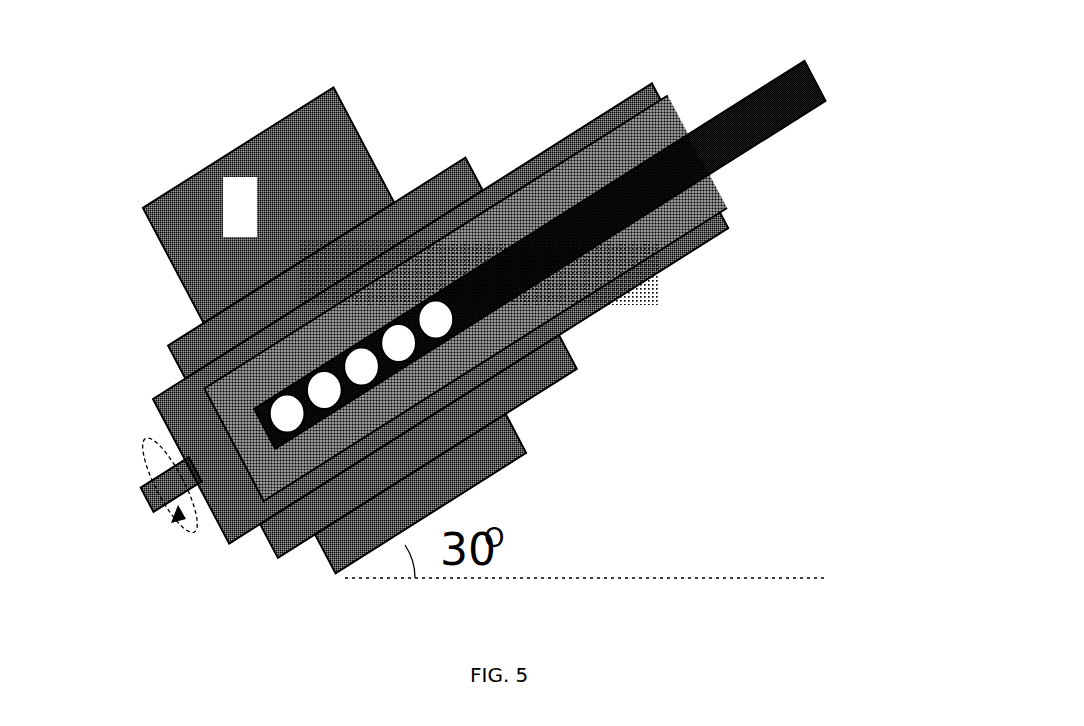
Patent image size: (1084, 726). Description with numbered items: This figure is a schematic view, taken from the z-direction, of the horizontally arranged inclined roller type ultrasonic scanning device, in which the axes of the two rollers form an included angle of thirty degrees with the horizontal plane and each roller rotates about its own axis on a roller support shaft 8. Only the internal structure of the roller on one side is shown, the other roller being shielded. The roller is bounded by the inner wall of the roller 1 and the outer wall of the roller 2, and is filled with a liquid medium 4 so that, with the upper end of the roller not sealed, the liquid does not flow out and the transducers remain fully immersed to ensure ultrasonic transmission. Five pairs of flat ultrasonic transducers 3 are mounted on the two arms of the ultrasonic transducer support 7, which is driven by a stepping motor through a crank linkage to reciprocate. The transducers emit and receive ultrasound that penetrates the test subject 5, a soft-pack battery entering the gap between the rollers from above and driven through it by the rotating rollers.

The inner wall of the roller 1 is at (191, 383).
The outer wall of the roller 2 is at (230, 318).
The ultrasonic transducer 3 is at (287, 382).
The liquid medium 4 is at (557, 288).
The test subject 5 is at (268, 205).
The ultrasonic transducer support 7 is at (805, 112).
The roller support shaft 8 is at (148, 505).